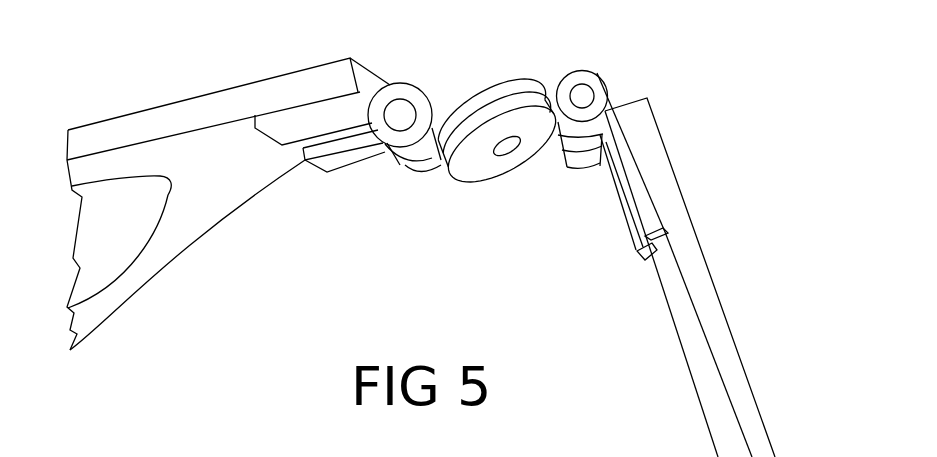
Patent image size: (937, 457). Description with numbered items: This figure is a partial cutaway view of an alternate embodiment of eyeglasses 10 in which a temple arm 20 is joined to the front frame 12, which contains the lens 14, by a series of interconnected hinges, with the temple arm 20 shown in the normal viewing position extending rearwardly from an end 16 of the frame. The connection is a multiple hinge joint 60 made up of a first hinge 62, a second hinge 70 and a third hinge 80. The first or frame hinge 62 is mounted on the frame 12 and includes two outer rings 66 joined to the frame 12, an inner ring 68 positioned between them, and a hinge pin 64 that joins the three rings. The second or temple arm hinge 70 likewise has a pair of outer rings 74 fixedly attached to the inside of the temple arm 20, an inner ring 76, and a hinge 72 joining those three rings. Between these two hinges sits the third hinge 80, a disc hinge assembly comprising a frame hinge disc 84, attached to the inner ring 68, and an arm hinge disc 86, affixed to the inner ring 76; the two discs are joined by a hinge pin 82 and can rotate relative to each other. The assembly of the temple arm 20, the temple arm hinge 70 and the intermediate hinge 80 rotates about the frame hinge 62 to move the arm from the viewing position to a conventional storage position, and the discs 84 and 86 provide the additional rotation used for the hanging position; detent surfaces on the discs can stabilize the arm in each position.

The eyeglasses 10 is at (380, 270).
The front frame 12 is at (182, 240).
The lens 14 is at (103, 253).
The end 16 is at (373, 77).
The temple arm 20 is at (698, 287).
The multiple hinge joint 60 is at (449, 192).
The first hinge 62 is at (377, 162).
The hinge pin 64 is at (405, 112).
The outer rings 66 is at (327, 144).
The inner ring 68 is at (412, 162).
The second hinge 70 is at (554, 60).
The hinge 72 is at (585, 94).
The outer rings 74 is at (617, 85).
The inner ring 76 is at (580, 147).
The third hinge 80 is at (478, 183).
The hinge pin 82 is at (505, 142).
The frame hinge disc 84 is at (509, 92).
The arm hinge disc 86 is at (485, 167).